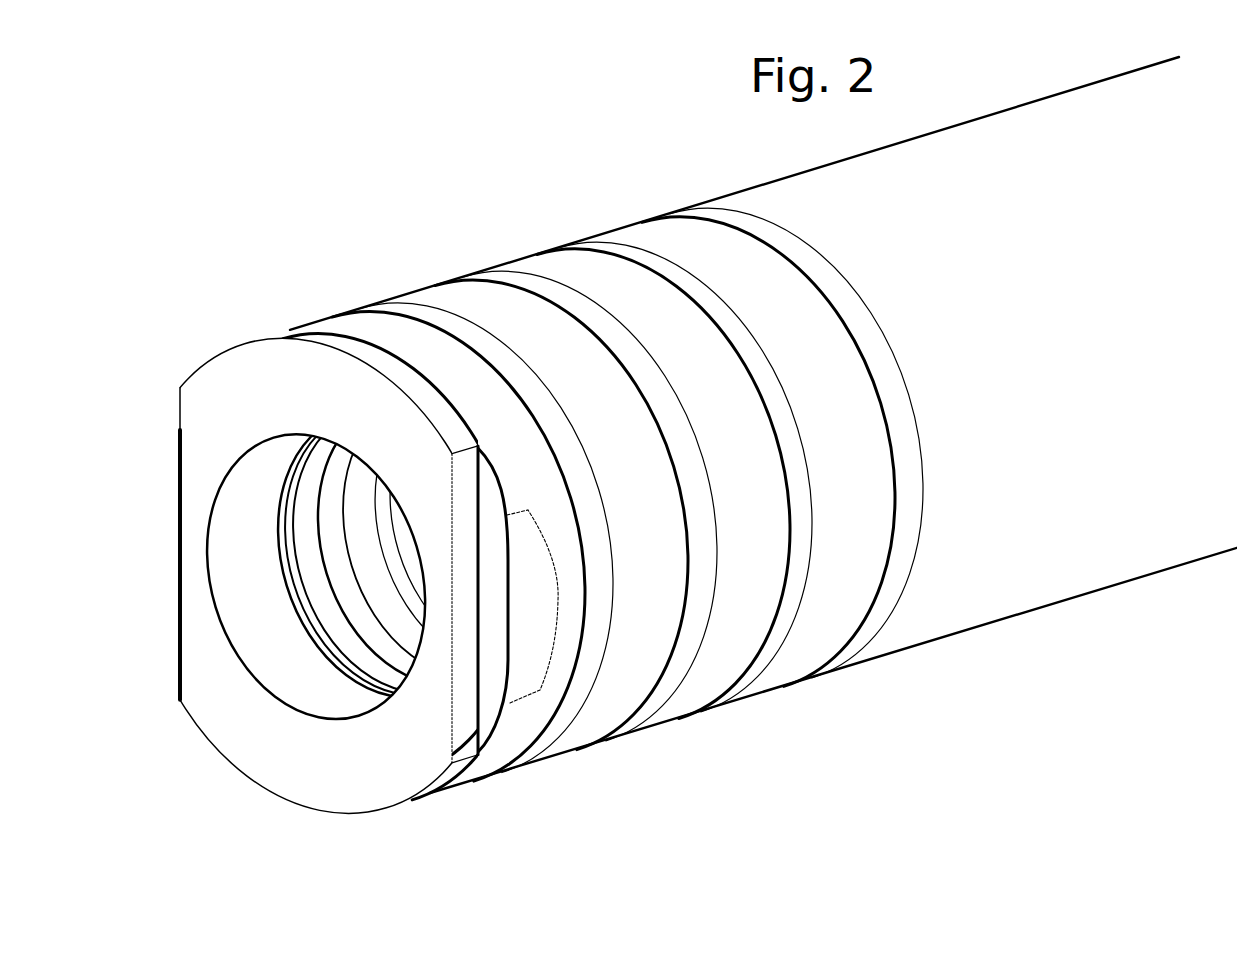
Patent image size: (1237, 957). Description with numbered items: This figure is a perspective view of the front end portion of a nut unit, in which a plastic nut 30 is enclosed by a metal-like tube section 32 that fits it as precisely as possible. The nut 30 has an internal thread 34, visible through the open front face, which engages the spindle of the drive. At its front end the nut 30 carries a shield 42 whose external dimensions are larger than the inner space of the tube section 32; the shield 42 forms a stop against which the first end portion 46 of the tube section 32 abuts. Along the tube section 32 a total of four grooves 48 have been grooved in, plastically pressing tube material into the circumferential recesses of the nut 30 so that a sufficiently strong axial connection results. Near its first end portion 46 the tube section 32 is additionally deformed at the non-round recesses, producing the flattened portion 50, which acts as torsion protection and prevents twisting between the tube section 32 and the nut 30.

The nut 30 is at (343, 348).
The tube section 32 is at (1020, 558).
The internal thread 34 is at (372, 638).
The shield 42 is at (238, 398).
The first end portion of the tube section 46 is at (497, 235).
The grooves 48 is at (797, 617).
The flattened portion 50 is at (532, 593).